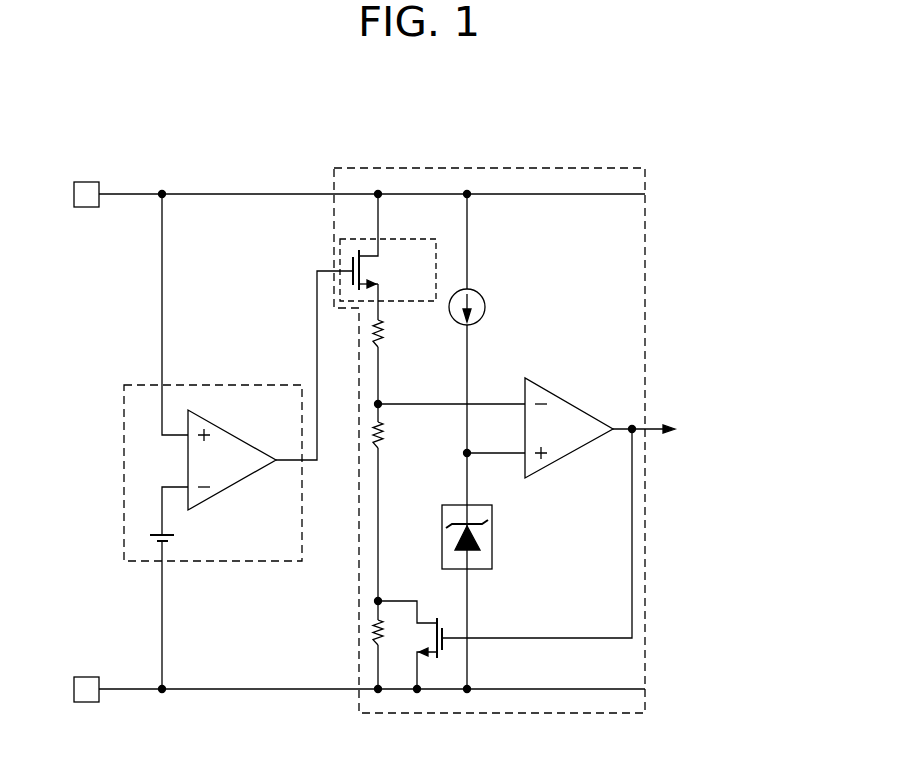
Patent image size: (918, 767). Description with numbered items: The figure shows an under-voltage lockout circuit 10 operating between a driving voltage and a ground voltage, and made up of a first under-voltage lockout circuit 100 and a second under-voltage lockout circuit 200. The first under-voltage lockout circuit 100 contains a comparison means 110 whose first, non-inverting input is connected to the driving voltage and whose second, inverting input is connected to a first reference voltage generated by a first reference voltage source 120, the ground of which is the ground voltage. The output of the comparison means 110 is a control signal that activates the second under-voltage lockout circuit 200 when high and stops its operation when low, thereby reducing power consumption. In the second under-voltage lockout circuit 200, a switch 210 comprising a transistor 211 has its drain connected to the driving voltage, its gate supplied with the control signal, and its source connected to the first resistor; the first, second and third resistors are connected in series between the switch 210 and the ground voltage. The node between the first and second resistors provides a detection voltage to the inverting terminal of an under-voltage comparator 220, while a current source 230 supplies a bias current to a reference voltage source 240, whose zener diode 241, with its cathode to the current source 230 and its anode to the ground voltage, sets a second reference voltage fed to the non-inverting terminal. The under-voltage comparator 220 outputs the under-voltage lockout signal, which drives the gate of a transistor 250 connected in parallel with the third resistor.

The under-voltage lockout circuit 10 is at (651, 141).
The first under-voltage lockout circuit 100 is at (243, 385).
The comparison means 110 is at (237, 437).
The first reference voltage source 120 is at (175, 540).
The second under-voltage lockout circuit 200 is at (527, 168).
The switch 210 is at (417, 228).
The transistor 211 is at (375, 271).
The under-voltage comparator 220 is at (572, 402).
The current source 230 is at (482, 292).
The reference voltage source 240 is at (492, 553).
The zener diode 241 is at (475, 531).
The transistor 250 is at (419, 639).